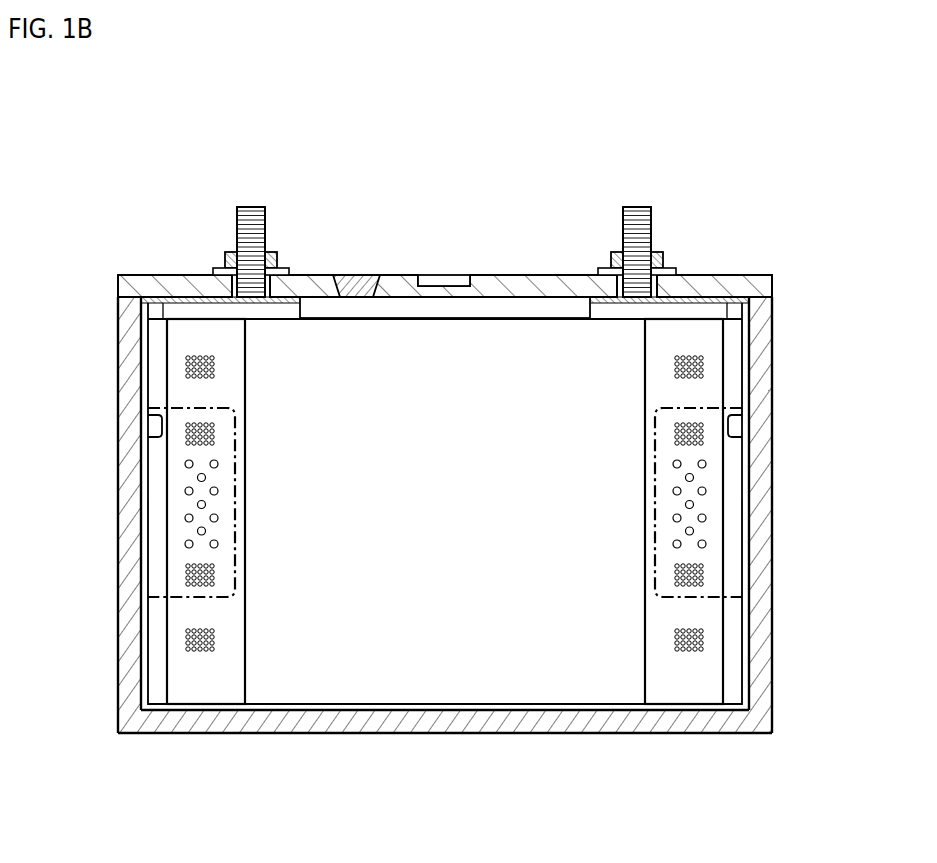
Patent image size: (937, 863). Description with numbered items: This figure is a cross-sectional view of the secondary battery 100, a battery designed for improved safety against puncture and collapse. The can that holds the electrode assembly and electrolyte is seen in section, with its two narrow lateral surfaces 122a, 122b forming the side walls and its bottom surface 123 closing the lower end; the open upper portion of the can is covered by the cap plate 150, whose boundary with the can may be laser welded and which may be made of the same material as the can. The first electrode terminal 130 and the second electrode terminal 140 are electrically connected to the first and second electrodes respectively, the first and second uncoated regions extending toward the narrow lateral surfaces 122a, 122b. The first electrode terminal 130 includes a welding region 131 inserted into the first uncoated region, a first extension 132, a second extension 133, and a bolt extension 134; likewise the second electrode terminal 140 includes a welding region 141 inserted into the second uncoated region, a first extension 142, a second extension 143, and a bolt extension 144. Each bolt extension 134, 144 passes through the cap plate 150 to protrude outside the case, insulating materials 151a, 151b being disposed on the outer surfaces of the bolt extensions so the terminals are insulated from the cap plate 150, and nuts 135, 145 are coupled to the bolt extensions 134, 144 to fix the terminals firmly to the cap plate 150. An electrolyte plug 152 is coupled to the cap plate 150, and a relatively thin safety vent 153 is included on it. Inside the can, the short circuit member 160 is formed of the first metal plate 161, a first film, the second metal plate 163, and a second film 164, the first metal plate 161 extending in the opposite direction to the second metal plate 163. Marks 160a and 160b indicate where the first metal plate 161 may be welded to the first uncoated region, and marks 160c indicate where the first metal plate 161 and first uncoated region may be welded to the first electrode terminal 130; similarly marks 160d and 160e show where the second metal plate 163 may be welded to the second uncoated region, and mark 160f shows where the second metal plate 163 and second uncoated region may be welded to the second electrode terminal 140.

The secondary battery 100 is at (770, 121).
The narrow lateral surface 122a is at (763, 322).
The narrow lateral surface 122b is at (130, 312).
The bottom surface 123 is at (735, 730).
The first electrode terminal 130 is at (233, 218).
The welding region 131 is at (157, 574).
The first extension 132 is at (157, 342).
The second extension 133 is at (180, 292).
The bolt extension 134 is at (254, 207).
The nut 135 is at (276, 253).
The second electrode terminal 140 is at (656, 217).
The welding region 141 is at (733, 574).
The first extension 142 is at (733, 353).
The second extension 143 is at (715, 292).
The bolt extension 144 is at (636, 207).
The nut 145 is at (612, 258).
The cap plate 150 is at (764, 283).
The insulating material 151a is at (215, 268).
The insulating material 151b is at (680, 268).
The electrolyte plug 152 is at (357, 273).
The safety vent 153 is at (442, 273).
The short circuit member 160 is at (442, 579).
The welding marks 160a is at (190, 370).
The welding marks 160b is at (190, 640).
The welding marks 160c is at (185, 570).
The welding marks 160d is at (702, 370).
The welding marks 160e is at (702, 640).
The welding mark 160f is at (703, 570).
The first metal plate 161 is at (208, 694).
The second metal plate 163 is at (688, 694).
The second film 164 is at (428, 694).